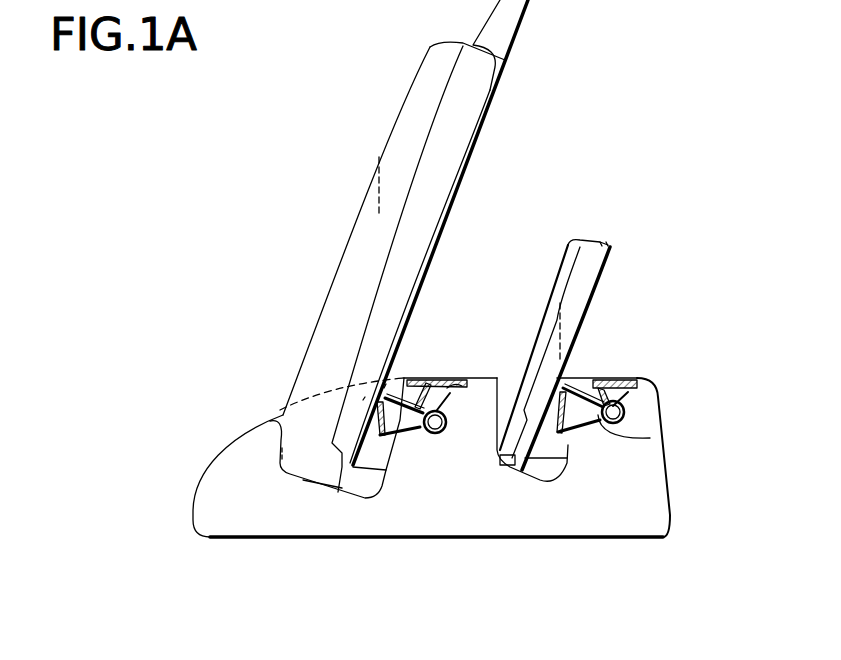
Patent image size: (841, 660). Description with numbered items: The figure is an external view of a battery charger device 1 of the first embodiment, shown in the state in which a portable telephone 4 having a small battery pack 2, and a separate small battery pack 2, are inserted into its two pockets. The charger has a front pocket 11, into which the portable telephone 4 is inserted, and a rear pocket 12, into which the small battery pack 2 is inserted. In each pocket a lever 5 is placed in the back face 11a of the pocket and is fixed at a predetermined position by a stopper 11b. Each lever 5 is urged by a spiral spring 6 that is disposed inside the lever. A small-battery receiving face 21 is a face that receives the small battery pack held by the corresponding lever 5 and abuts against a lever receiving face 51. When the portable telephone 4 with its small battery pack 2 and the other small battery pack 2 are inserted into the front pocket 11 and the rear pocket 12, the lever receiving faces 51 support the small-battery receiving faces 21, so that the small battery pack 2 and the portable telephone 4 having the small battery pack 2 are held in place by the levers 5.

The battery charger device 1 is at (453, 523).
The small battery pack 2 is at (585, 278).
The portable telephone 4 is at (398, 125).
The lever 5 is at (403, 418).
The spiral spring 6 is at (447, 430).
The front pocket 11 is at (317, 480).
The back face 11a is at (407, 380).
The stopper 11b is at (430, 375).
The rear pocket 12 is at (542, 480).
The small-battery receiving face 21 is at (365, 397).
The lever receiving face 51 is at (386, 384).